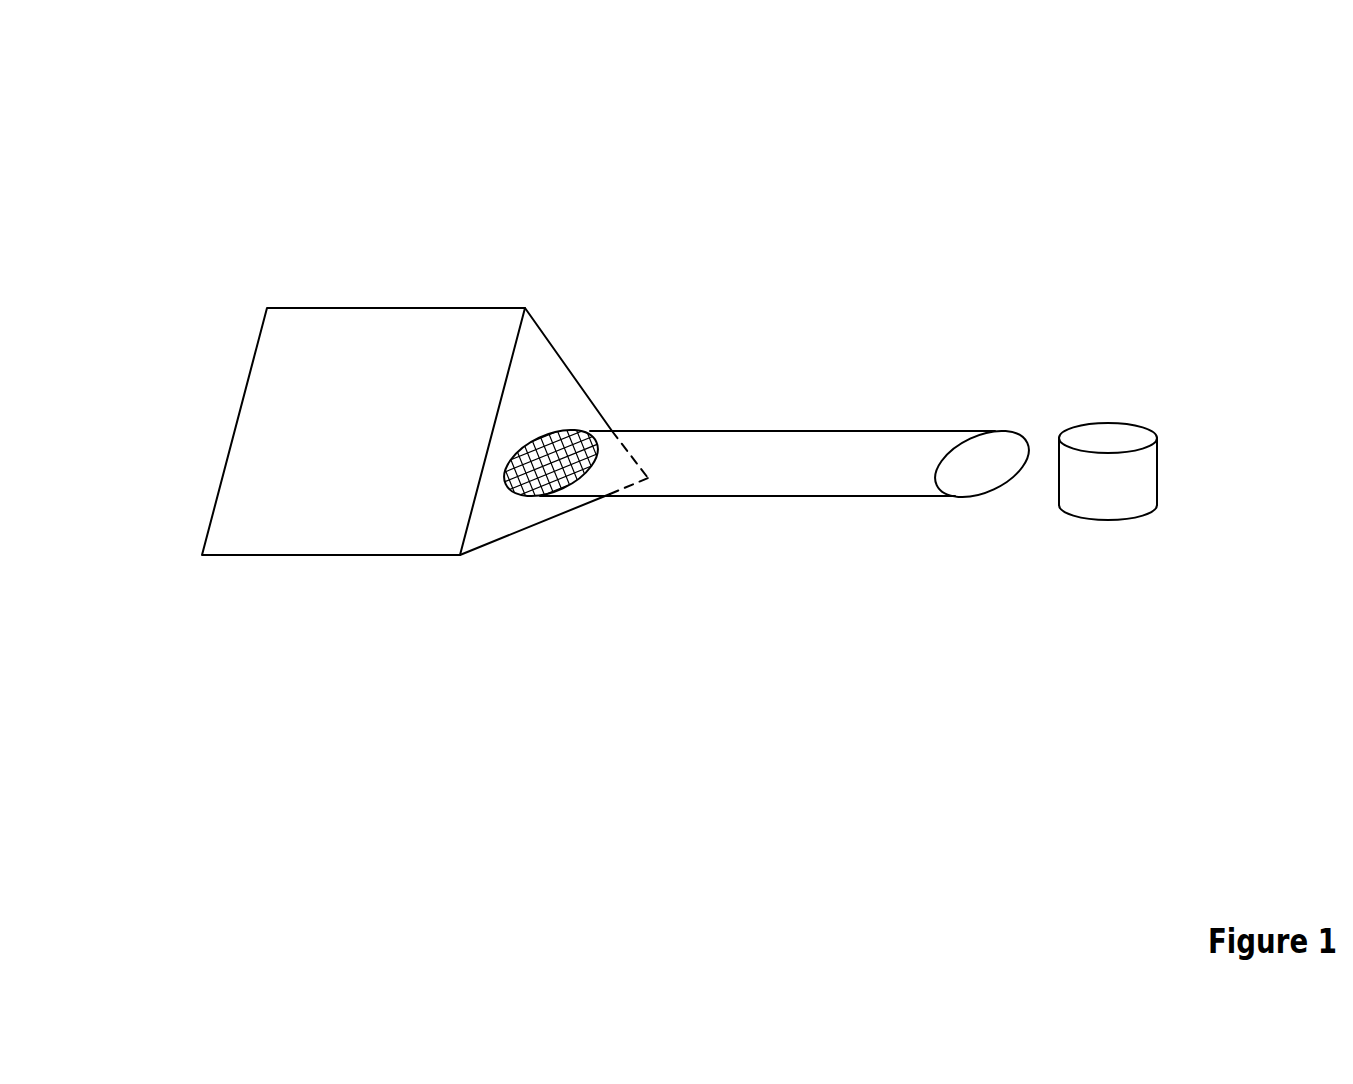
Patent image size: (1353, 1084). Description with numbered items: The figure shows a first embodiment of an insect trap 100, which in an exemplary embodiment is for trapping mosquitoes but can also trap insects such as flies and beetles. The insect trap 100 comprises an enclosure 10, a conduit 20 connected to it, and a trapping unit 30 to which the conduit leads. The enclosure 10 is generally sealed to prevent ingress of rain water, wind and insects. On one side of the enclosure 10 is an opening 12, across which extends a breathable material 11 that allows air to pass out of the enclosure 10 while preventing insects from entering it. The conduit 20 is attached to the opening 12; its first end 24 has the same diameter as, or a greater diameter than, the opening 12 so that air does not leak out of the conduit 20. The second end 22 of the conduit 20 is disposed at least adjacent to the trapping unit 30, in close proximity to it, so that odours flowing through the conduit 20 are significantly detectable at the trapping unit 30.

The insect trap 100 is at (280, 103).
The enclosure 10 is at (360, 555).
The breathable material 11 is at (588, 440).
The opening 12 is at (533, 496).
The conduit 20 is at (783, 497).
The second end of the conduit 22 is at (985, 488).
The first end of the conduit 24 is at (597, 457).
The trapping unit 30 is at (1112, 520).